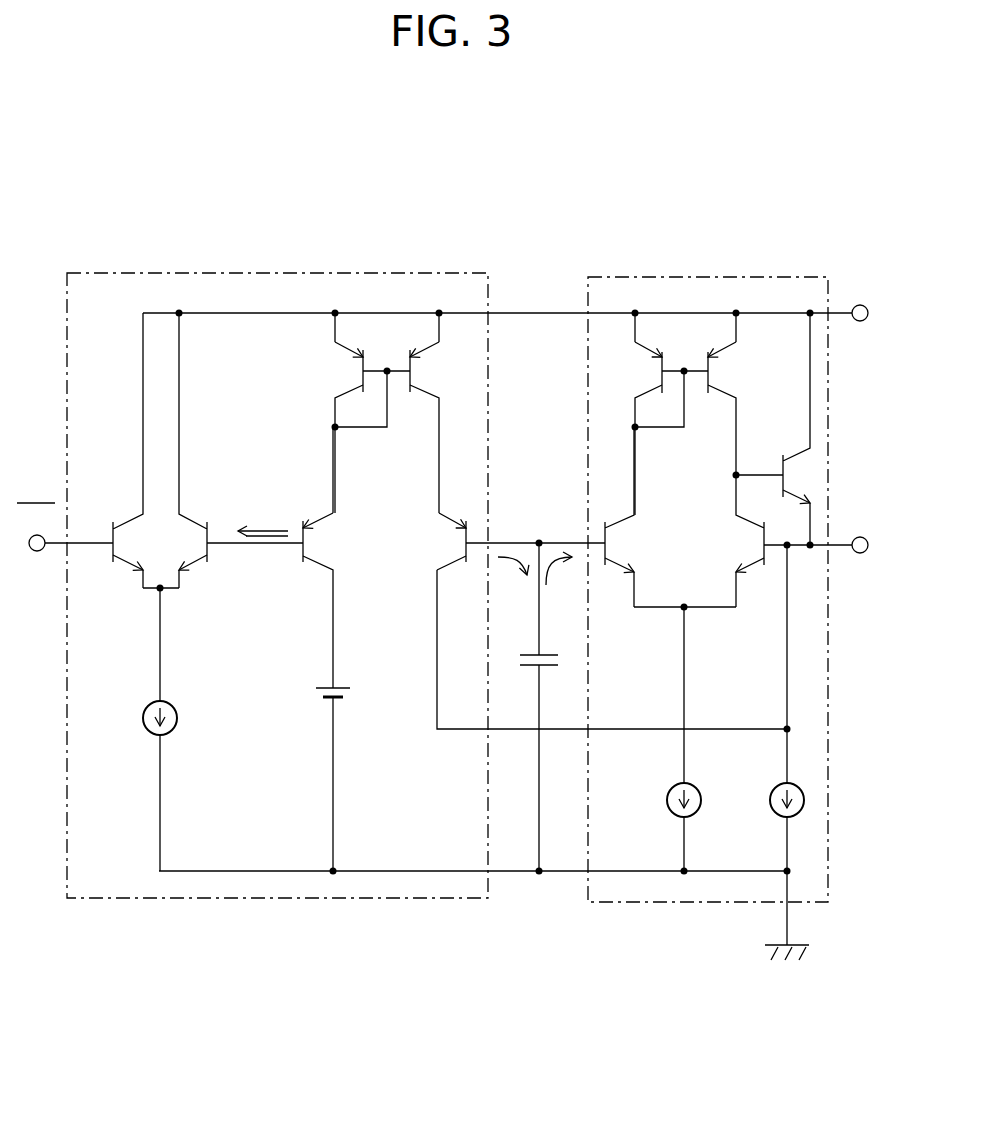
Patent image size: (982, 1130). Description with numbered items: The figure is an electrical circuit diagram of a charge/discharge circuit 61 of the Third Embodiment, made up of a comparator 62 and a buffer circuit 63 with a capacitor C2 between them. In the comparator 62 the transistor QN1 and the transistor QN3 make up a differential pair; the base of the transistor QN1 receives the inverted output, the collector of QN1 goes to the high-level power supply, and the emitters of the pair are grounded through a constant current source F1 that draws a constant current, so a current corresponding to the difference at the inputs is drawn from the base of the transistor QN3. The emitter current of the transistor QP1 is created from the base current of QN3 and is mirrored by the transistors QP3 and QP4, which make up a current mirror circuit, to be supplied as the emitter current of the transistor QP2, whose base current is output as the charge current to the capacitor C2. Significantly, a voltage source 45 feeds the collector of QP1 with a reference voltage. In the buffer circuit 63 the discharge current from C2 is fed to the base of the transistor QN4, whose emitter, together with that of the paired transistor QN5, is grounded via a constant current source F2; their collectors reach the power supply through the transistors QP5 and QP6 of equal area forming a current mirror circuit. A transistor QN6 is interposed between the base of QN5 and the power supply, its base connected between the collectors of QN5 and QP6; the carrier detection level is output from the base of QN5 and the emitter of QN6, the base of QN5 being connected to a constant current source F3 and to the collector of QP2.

The charge/discharge circuit 61 is at (327, 176).
The comparator 62 is at (265, 272).
The buffer circuit 63 is at (697, 276).
The voltage source 45 is at (336, 688).
The transistor QN1 is at (110, 562).
The transistor QN3 is at (207, 520).
The transistor QP1 is at (313, 565).
The transistor QP2 is at (462, 548).
The transistor QP3 is at (347, 390).
The transistor QP4 is at (410, 392).
The transistor QP5 is at (665, 362).
The transistor QP6 is at (724, 390).
The transistor QN4 is at (620, 528).
The transistor QN5 is at (755, 541).
The transistor QN6 is at (778, 452).
The constant current source F1 is at (143, 716).
The constant current source F2 is at (670, 796).
The constant current source F3 is at (774, 796).
The capacitor C2 is at (545, 668).